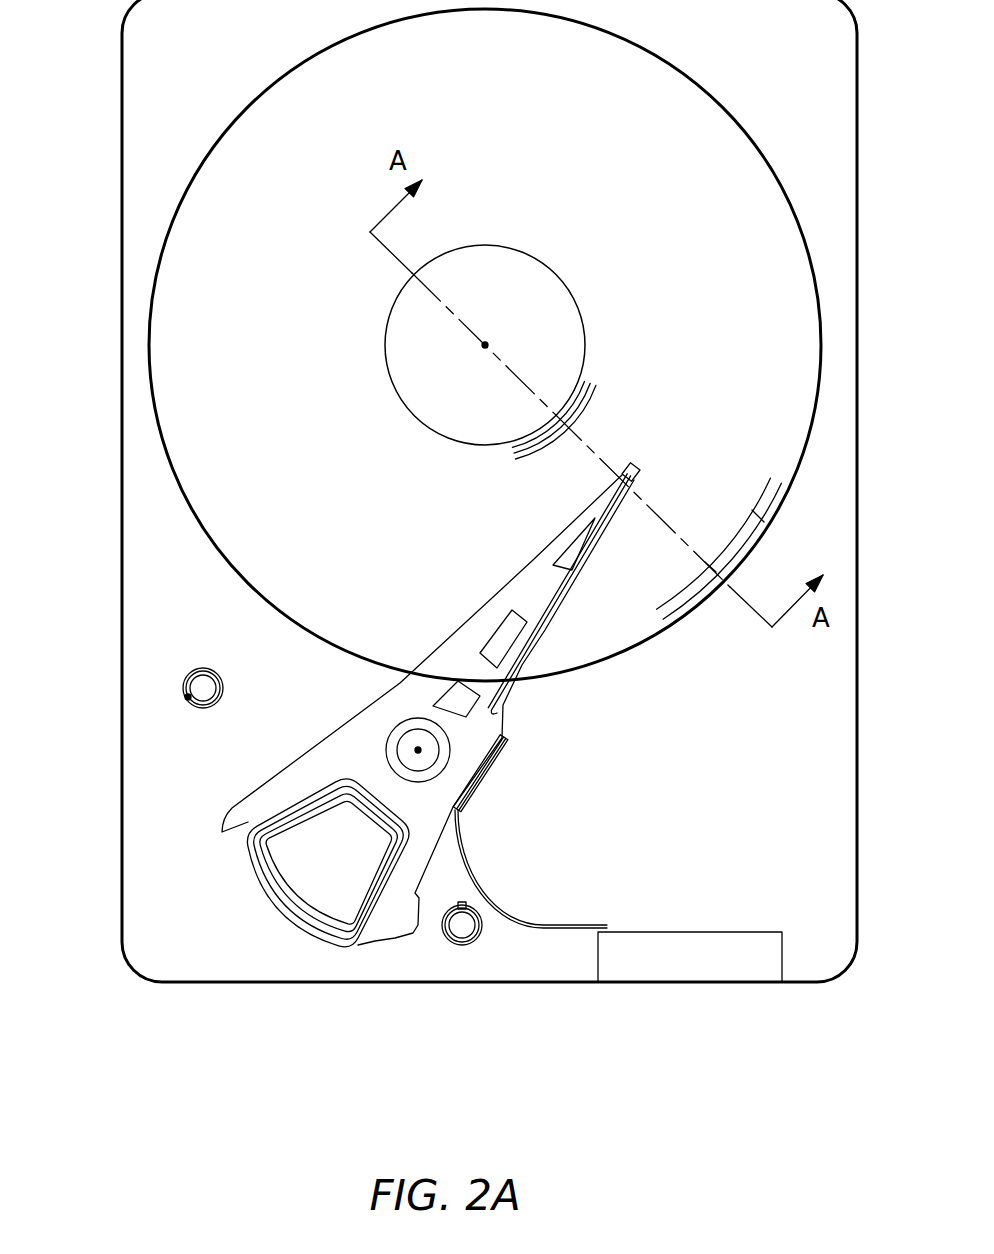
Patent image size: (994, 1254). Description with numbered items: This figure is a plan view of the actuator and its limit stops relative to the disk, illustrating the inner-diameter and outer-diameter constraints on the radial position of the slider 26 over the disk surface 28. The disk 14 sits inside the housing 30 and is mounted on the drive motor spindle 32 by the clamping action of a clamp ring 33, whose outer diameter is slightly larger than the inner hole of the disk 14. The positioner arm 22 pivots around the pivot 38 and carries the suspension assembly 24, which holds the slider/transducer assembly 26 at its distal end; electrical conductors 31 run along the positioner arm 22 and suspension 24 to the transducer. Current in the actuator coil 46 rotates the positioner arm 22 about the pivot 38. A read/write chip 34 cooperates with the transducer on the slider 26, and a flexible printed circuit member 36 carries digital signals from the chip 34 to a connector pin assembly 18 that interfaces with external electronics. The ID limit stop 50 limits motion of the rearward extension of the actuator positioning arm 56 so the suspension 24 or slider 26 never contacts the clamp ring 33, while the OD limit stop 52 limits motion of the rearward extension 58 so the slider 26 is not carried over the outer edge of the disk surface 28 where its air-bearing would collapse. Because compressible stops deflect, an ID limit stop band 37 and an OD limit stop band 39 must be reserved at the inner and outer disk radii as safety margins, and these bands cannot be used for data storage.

The disk 14 is at (727, 110).
The connector pin assembly 18 is at (730, 977).
The positioner arm 22 is at (485, 683).
The suspension assembly 24 is at (598, 505).
The slider/transducer assembly 26 is at (634, 468).
The disk surface 28 is at (182, 295).
The housing 30 is at (857, 178).
The electrical conductors 31 is at (570, 583).
The drive motor spindle 32 is at (485, 345).
The clamp ring 33 is at (572, 325).
The read/write chip 34 is at (483, 777).
The flexible printed circuit member 36 is at (498, 910).
The ID limit stop band 37 is at (587, 392).
The pivot 38 is at (418, 750).
The OD limit stop band 39 is at (752, 517).
The actuator coil 46 is at (275, 910).
The ID limit stop 50 is at (462, 945).
The OD limit stop 52 is at (188, 697).
The rearward extension of the actuator positioning arm 56 is at (397, 937).
The rearward extension of the actuator positioning arm 58 is at (222, 822).